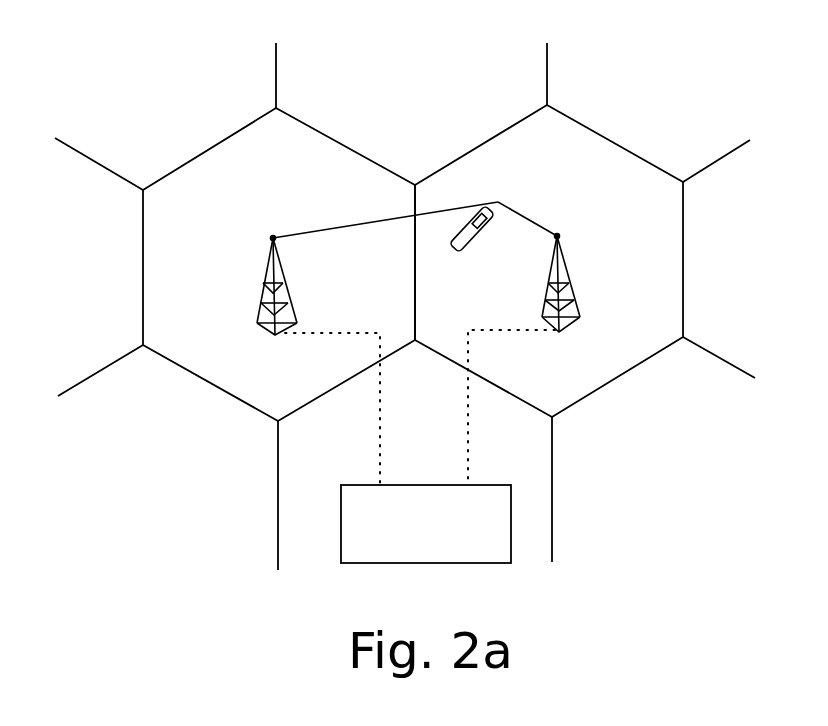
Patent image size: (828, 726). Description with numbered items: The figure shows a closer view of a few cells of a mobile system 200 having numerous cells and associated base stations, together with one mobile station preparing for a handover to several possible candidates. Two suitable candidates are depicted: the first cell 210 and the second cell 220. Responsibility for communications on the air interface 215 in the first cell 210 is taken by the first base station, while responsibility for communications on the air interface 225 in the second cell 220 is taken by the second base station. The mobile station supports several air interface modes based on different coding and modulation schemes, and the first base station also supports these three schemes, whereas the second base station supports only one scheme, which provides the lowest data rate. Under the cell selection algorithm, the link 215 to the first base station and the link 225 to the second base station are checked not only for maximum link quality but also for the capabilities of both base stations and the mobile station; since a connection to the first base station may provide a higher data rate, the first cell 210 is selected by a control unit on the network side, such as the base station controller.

The mobile system 200 is at (115, 24).
The first cell 210 is at (208, 175).
The air interface 215 is at (358, 224).
The second cell 220 is at (567, 150).
The air interface 225 is at (523, 217).